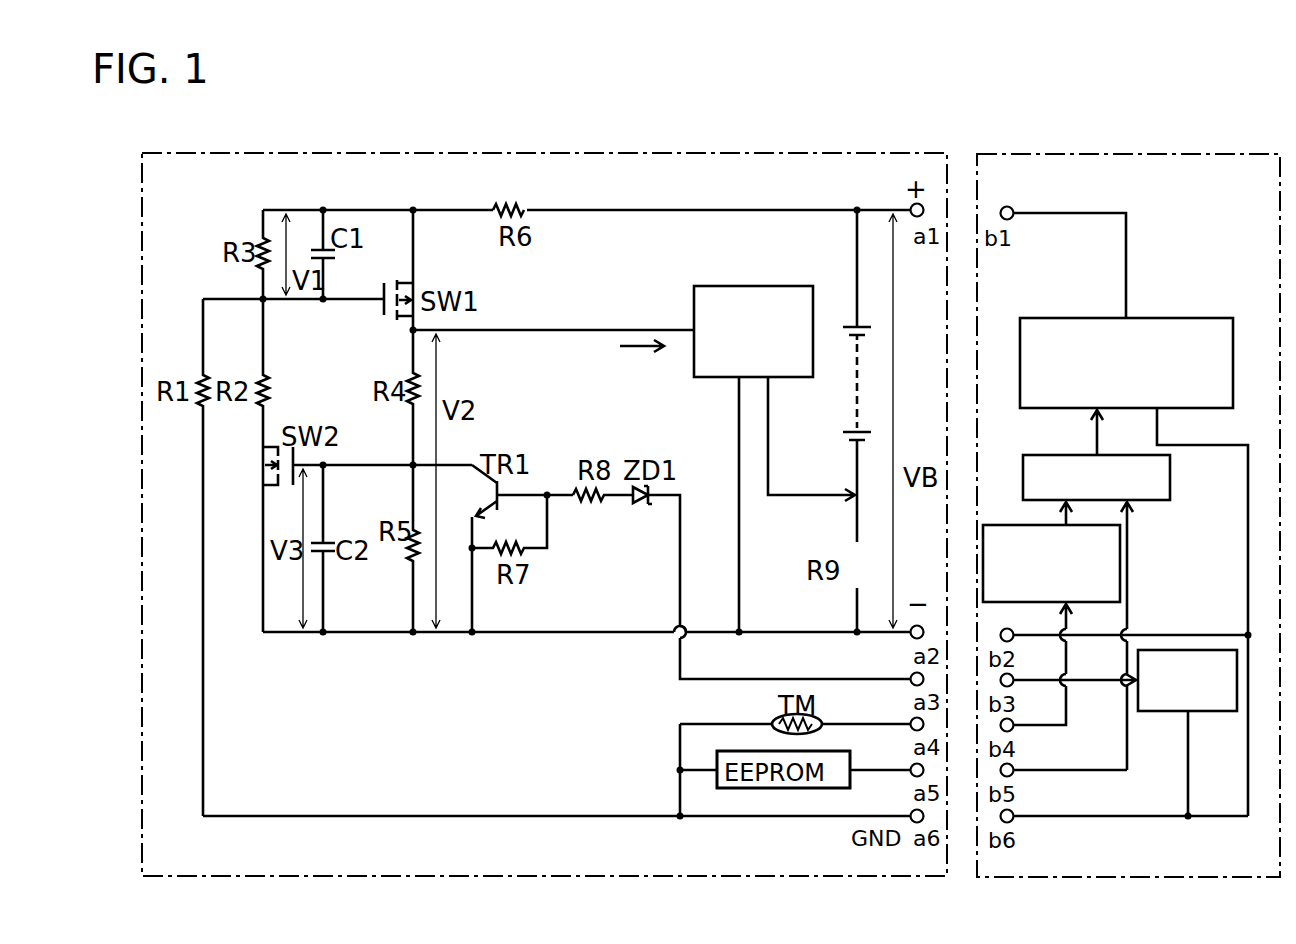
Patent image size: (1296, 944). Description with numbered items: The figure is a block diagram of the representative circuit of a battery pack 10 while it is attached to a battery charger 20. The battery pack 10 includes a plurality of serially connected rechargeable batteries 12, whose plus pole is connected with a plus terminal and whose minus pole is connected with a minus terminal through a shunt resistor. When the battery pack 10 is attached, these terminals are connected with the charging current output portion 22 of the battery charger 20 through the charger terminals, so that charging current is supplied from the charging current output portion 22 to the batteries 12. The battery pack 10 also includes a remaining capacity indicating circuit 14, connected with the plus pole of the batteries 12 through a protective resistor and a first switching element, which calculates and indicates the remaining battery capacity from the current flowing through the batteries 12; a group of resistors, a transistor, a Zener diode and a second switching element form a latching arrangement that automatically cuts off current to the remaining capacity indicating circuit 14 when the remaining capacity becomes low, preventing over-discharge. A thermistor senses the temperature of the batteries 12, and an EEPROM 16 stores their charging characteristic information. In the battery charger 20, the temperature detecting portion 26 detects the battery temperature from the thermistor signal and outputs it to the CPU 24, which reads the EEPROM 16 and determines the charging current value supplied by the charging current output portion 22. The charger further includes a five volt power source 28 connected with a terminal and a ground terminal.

The battery pack 10 is at (660, 153).
The rechargeable batteries 12 is at (878, 389).
The remaining capacity indicating circuit 14 is at (728, 286).
The EEPROM 16 is at (822, 751).
The battery charger 20 is at (1215, 154).
The charging current output portion 22 is at (1190, 318).
The CPU 24 is at (1170, 478).
The temperature detecting portion 26 is at (1011, 525).
The 5 V power source 28 is at (1160, 711).